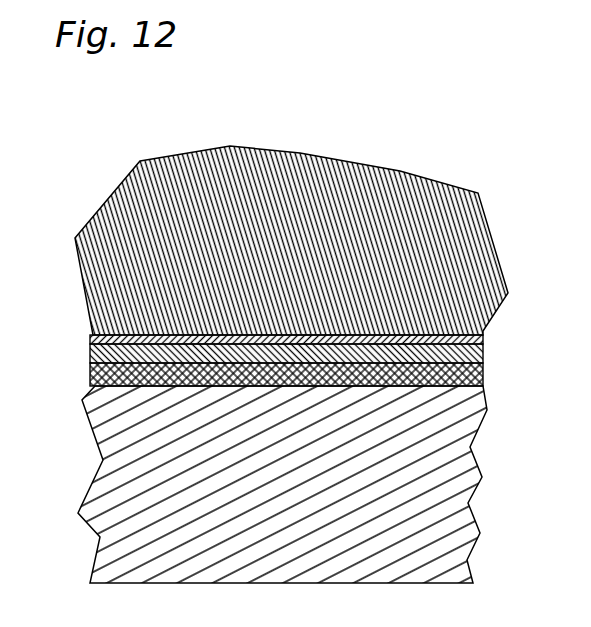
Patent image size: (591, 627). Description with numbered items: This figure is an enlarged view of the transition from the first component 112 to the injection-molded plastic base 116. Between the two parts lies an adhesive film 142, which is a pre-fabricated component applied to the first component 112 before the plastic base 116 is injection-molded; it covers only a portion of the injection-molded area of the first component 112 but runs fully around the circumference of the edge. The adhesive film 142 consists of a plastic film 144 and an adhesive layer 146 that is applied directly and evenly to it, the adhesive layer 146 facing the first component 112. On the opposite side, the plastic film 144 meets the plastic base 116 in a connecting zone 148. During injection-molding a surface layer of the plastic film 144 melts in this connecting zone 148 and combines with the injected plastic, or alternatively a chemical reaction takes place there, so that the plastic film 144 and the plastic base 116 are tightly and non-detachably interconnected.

The first component 112 is at (455, 480).
The plastic base 116 is at (463, 203).
The adhesive film 142 is at (75, 336).
The plastic film 144 is at (484, 347).
The adhesive layer 146 is at (484, 372).
The connecting zone 148 is at (484, 335).